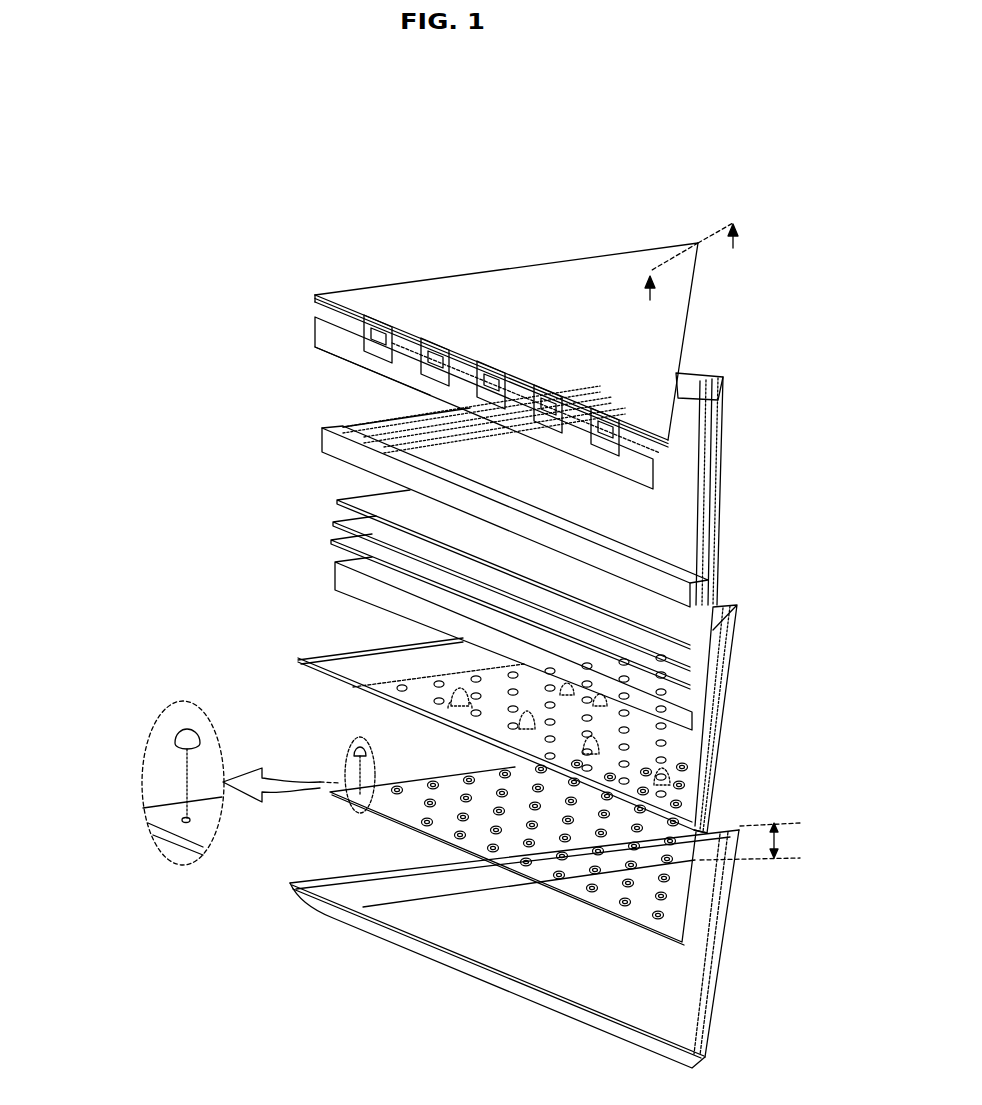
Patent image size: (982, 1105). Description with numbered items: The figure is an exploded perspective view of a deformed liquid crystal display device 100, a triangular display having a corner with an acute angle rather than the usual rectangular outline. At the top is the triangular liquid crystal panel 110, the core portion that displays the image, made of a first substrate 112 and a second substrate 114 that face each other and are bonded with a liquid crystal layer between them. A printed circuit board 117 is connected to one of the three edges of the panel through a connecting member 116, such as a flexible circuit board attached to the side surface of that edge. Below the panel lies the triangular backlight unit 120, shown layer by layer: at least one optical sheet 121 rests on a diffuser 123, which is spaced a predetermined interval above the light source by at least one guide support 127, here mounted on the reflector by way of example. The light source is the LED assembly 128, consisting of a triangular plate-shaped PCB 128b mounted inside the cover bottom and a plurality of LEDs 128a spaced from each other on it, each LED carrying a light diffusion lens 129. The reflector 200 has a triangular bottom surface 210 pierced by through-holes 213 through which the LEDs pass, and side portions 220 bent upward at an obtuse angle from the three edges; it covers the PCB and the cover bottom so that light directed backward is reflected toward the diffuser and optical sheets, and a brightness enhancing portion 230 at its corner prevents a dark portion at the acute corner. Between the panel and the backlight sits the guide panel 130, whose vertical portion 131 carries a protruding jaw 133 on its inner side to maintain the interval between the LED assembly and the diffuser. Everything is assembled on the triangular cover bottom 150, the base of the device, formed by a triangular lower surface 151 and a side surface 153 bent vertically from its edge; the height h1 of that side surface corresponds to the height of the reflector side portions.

The deformed liquid crystal display device 100 is at (680, 183).
The triangular liquid crystal panel 110 is at (475, 339).
The first substrate 112 is at (315, 300).
The second substrate 114 is at (314, 292).
The connecting member 116 is at (315, 320).
The printed circuit board 117 is at (337, 347).
The triangular backlight unit 120 is at (368, 617).
The optical sheet 121 is at (331, 540).
The diffuser 123 is at (460, 643).
The guide support 127 is at (452, 692).
The LED assembly 128 is at (182, 781).
The LED 128a is at (183, 800).
The PCB 128b is at (160, 814).
The light diffusion lens 129 is at (176, 738).
The guide panel 130 is at (446, 490).
The vertical portion 131 is at (322, 442).
The protruding jaw 133 is at (385, 410).
The triangular cover bottom 150 is at (580, 949).
The lower surface 151 is at (718, 935).
The side surface 153 is at (718, 962).
The reflector 200 is at (581, 772).
The bottom surface 210 is at (705, 742).
The through-hole 213 is at (684, 784).
The side portion 220 is at (707, 765).
The brightness enhancing portion 230 is at (724, 627).
The height of the side surface h1 is at (756, 841).